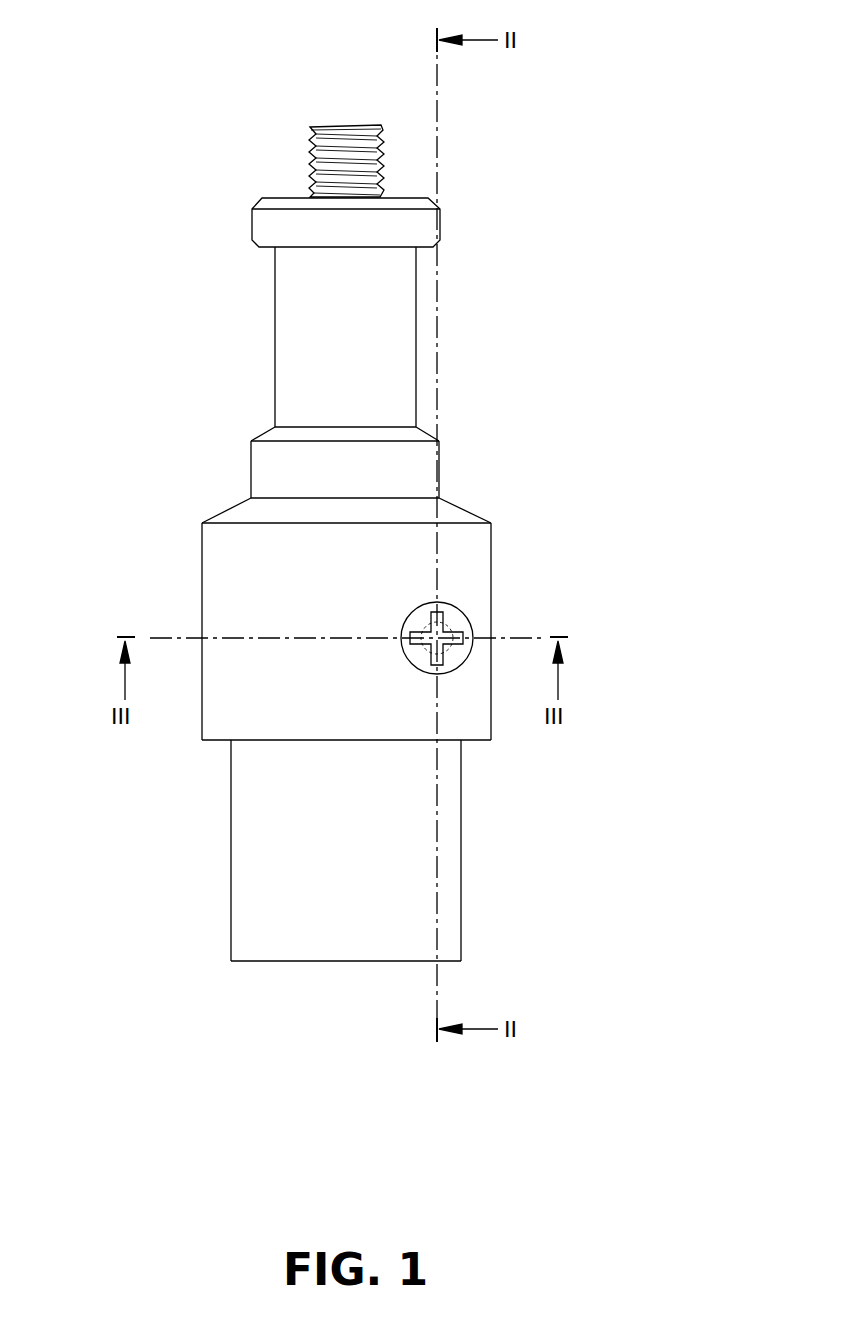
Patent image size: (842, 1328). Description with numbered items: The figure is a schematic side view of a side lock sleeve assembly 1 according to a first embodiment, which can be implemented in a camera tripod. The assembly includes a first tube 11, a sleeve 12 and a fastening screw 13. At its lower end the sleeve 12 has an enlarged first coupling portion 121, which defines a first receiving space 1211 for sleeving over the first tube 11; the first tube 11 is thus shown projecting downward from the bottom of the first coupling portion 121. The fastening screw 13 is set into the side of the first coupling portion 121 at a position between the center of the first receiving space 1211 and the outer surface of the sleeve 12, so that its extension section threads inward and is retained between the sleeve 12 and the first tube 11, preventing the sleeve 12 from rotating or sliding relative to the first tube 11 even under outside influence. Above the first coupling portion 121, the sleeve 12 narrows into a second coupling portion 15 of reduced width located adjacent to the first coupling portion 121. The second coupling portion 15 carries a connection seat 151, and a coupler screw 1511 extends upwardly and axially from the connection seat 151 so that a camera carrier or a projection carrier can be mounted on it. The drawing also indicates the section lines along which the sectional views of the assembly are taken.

The side lock sleeve assembly 1 is at (174, 454).
The first tube 11 is at (243, 910).
The sleeve 12 is at (247, 418).
The first coupling portion 121 is at (210, 590).
The first receiving space 1211 is at (462, 741).
The fastening screw 13 is at (455, 610).
The second coupling portion 15 is at (265, 230).
The connection seat 151 is at (286, 197).
The coupler screw 1511 is at (345, 133).